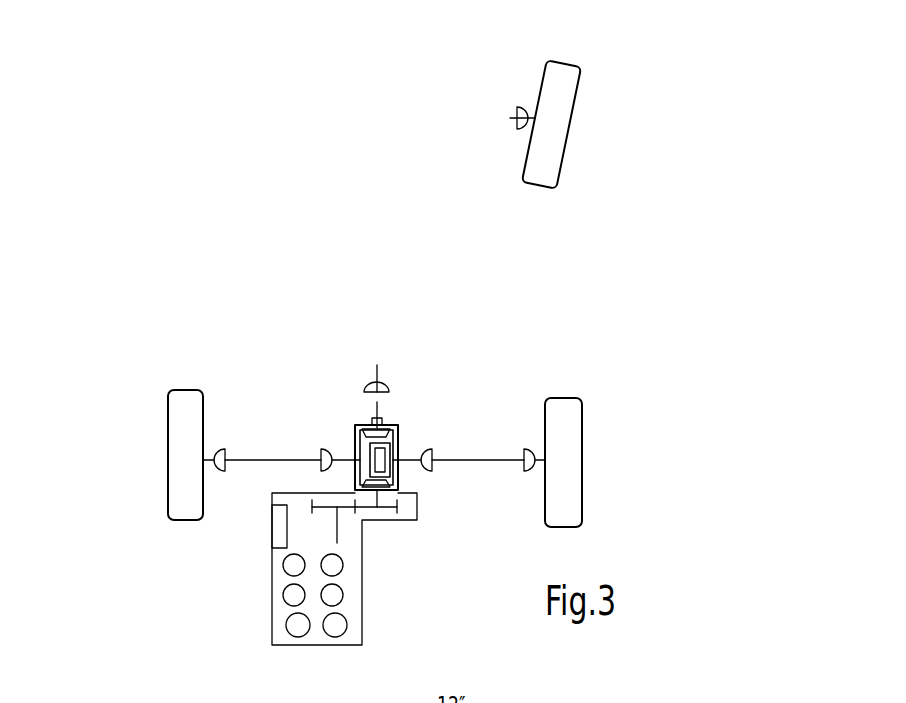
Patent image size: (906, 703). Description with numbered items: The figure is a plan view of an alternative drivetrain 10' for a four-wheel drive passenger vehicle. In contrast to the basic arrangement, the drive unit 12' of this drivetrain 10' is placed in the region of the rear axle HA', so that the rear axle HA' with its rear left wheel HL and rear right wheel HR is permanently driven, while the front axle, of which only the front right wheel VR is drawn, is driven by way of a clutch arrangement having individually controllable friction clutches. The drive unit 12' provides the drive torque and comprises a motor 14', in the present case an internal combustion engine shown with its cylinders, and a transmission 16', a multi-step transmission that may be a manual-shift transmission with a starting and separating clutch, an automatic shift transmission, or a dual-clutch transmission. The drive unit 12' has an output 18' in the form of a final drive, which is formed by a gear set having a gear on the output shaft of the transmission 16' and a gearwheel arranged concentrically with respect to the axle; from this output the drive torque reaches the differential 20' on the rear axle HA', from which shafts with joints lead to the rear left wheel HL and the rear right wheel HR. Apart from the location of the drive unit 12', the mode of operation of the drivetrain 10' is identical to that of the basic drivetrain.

The drivetrain 10' is at (624, 96).
The drive unit 12' is at (320, 596).
The motor 14' is at (304, 628).
The transmission 16' is at (236, 552).
The output 18' is at (384, 539).
The differential 20' is at (345, 427).
The front right wheel VR is at (550, 157).
The rear left wheel HL is at (180, 495).
The rear right wheel HR is at (568, 513).
The rear axle HA' is at (294, 454).